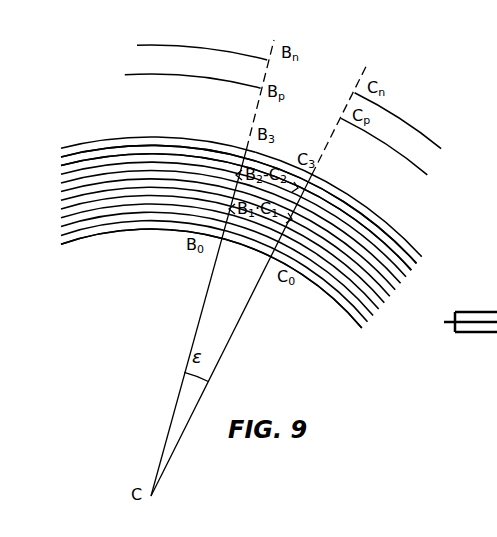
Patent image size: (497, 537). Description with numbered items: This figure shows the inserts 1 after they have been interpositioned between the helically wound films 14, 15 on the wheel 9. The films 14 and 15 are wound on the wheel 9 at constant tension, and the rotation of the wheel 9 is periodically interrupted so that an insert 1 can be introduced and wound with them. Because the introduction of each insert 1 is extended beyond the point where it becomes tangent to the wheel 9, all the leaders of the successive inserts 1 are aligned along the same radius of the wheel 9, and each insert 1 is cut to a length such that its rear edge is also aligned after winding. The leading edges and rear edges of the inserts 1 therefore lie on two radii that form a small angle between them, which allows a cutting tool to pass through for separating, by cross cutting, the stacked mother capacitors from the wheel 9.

The insert 1 is at (175, 166).
The film 14 is at (110, 215).
The film 15 is at (110, 215).
The wheel 9 is at (113, 271).